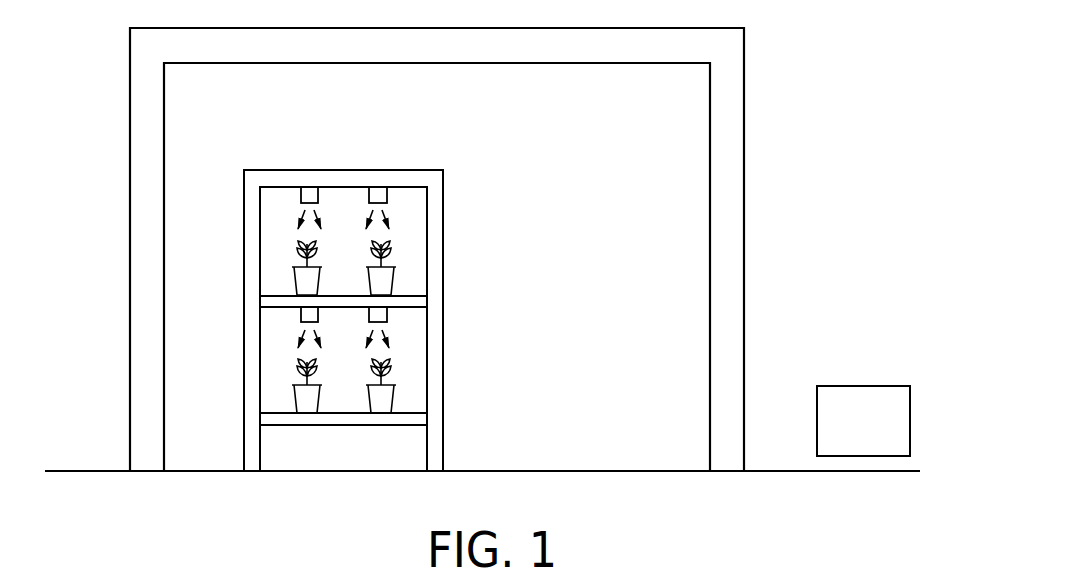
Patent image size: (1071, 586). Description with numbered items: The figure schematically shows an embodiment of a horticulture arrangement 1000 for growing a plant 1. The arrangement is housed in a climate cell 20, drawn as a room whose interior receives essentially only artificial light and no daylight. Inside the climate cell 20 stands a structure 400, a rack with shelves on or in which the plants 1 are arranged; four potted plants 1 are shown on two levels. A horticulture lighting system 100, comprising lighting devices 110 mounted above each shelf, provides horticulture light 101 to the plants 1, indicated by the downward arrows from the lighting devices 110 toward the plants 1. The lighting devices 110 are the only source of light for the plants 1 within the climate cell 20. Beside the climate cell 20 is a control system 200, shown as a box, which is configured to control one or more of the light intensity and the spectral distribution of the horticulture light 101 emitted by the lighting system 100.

The plant 1 is at (288, 257).
The climate cell 20 is at (112, 131).
The horticulture lighting system 100 is at (399, 200).
The horticulture light 101 is at (294, 222).
The lighting device 110 is at (366, 192).
The control system 200 is at (862, 377).
The structure 400 is at (277, 313).
The horticulture arrangement 1000 is at (796, 159).